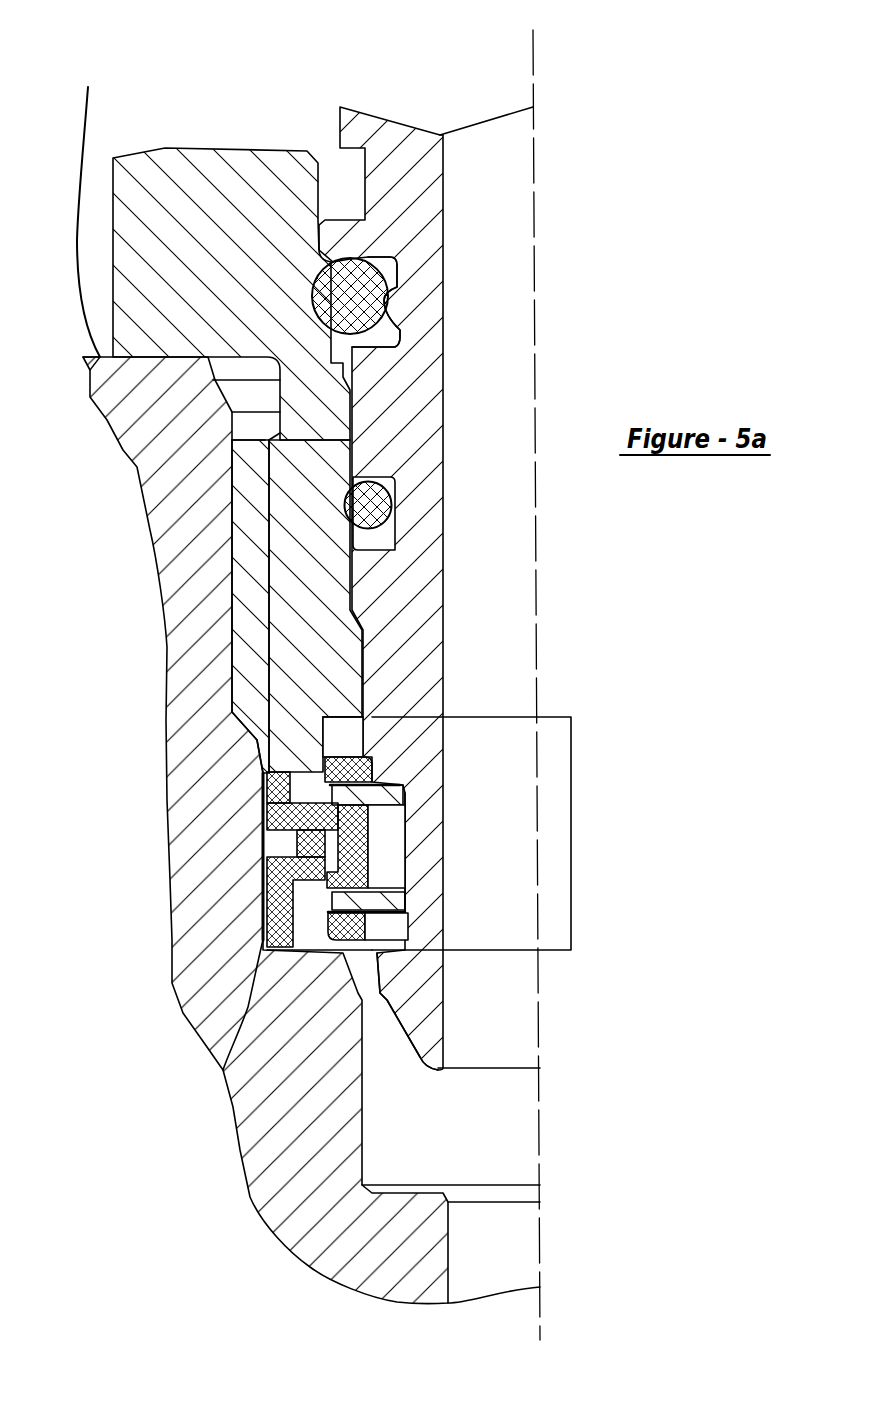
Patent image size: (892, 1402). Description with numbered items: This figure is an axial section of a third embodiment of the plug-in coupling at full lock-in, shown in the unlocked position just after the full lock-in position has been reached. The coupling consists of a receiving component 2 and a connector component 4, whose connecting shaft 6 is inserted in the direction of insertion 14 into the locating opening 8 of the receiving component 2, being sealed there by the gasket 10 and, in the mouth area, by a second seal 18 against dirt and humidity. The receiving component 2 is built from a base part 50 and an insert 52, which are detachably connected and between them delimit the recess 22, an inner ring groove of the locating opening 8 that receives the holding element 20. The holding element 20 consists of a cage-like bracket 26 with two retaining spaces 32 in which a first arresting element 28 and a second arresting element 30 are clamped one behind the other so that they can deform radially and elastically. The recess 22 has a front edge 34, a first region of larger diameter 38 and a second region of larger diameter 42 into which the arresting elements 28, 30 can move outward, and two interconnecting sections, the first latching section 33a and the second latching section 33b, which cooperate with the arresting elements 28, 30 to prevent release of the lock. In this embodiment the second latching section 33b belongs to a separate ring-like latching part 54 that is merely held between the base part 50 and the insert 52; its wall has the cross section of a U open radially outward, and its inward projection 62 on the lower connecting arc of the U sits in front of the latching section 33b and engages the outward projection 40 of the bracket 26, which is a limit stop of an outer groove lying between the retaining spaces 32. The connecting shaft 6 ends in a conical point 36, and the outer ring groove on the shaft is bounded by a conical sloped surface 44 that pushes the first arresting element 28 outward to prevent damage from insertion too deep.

The receiving component 2 is at (62, 57).
The connector component 4 is at (350, 107).
The connecting shaft 6 is at (393, 140).
The locating opening 8 is at (397, 343).
The gasket 10 is at (395, 513).
The direction of insertion 14 is at (533, 107).
The second seal 18 is at (367, 258).
The holding element 20 is at (388, 865).
The recess 22 is at (571, 829).
The bracket 26 is at (397, 835).
The first arresting element 28 is at (400, 797).
The second arresting element 30 is at (407, 900).
The retaining space 32 is at (343, 757).
The first latching section 33a is at (320, 738).
The second latching section 33b is at (290, 817).
The front edge 34 is at (353, 717).
The point 36 is at (432, 1048).
The first region of larger diameter 38 is at (297, 788).
The projection 40 is at (400, 793).
The second region of larger diameter 42 is at (223, 1067).
The conical sloped surface 44 is at (367, 773).
The base part 50 is at (303, 680).
The insert 52 is at (150, 150).
The latching part 54 is at (262, 921).
The projection directed radially inwards 62 is at (313, 832).